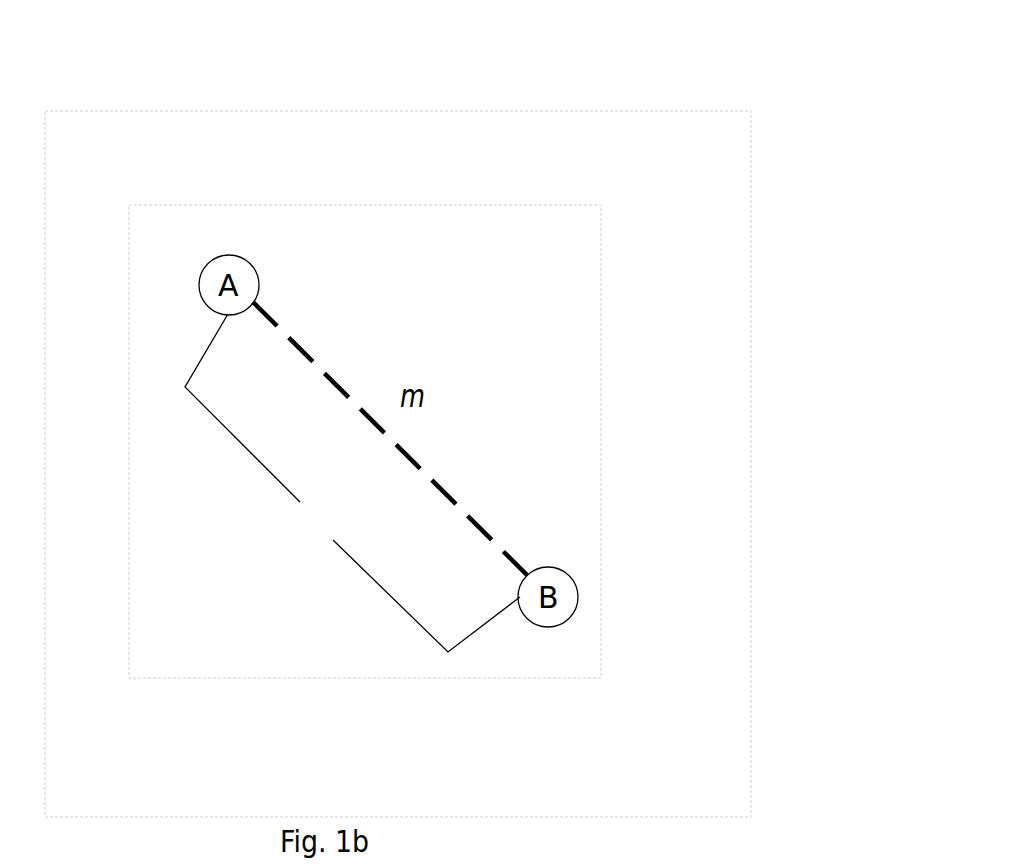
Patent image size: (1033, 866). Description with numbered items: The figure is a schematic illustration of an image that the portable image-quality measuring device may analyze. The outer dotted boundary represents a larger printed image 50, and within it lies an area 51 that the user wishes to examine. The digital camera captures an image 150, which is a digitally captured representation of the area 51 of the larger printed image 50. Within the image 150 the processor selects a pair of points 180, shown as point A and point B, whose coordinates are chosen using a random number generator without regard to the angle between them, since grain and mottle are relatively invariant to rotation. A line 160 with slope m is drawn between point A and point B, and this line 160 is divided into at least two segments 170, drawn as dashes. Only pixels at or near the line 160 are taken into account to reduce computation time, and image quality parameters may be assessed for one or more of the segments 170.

The larger printed image 50 is at (752, 610).
The image 150 is at (517, 110).
The area 51 is at (602, 204).
The line 160 is at (488, 373).
The segments 170 is at (302, 347).
The pair of points 180 is at (352, 483).